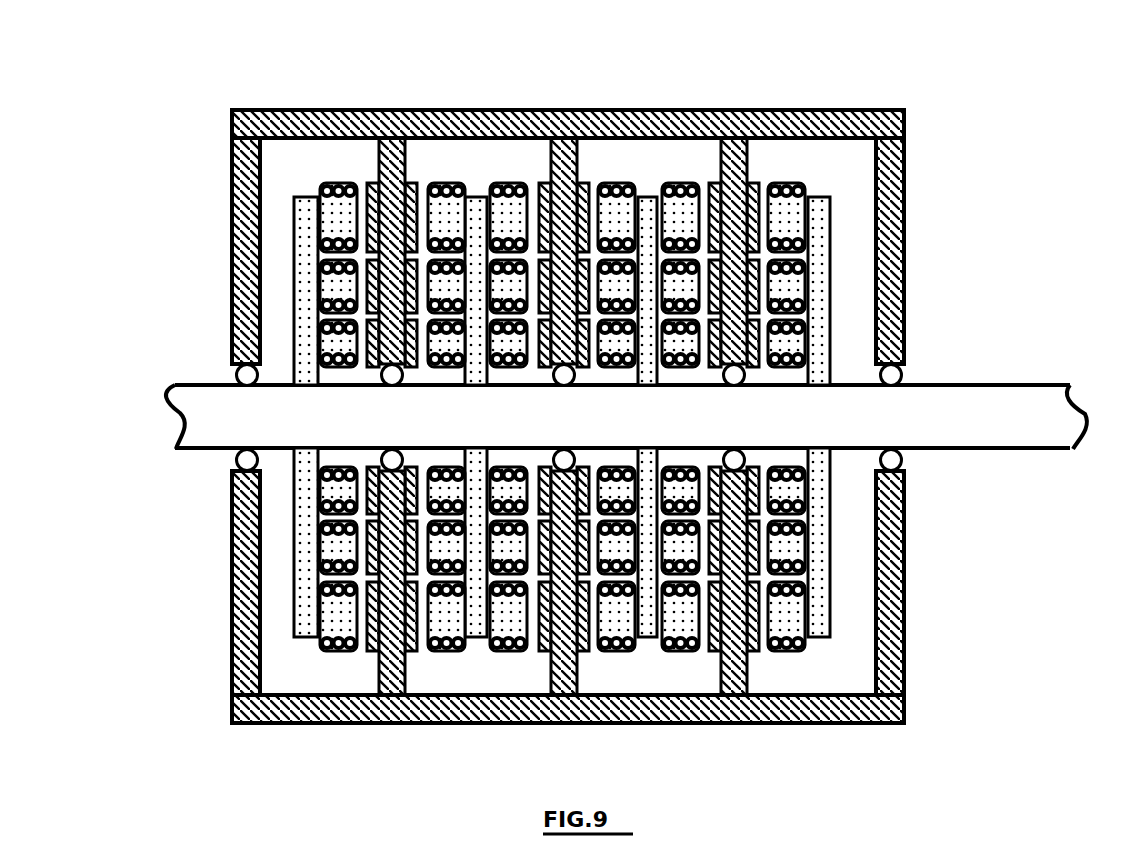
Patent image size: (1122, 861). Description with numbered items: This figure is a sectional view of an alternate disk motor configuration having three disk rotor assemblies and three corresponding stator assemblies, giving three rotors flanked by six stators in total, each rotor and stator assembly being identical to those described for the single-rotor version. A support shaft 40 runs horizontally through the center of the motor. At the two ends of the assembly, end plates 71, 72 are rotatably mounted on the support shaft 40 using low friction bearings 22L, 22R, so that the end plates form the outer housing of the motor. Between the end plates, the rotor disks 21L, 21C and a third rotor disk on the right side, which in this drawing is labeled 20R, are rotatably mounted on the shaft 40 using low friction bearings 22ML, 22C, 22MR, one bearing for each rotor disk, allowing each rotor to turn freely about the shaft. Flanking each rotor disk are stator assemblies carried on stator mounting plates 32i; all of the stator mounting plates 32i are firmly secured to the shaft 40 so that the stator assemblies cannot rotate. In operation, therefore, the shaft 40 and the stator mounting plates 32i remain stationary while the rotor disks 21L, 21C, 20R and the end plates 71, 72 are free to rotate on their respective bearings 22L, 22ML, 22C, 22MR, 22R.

The rotor disk 21L is at (478, 228).
The rotor disk 21C is at (658, 203).
The right motor unit 20R is at (712, 116).
The stator mounting plate 32i is at (305, 243).
The end plate 71 is at (233, 263).
The end plate 72 is at (905, 215).
The low friction bearing 22L is at (236, 374).
The low friction bearing 22ML is at (380, 462).
The low friction bearing 22C is at (550, 466).
The low friction bearing 22MR is at (745, 465).
The low friction bearing 22R is at (903, 372).
The support shaft 40 is at (990, 417).